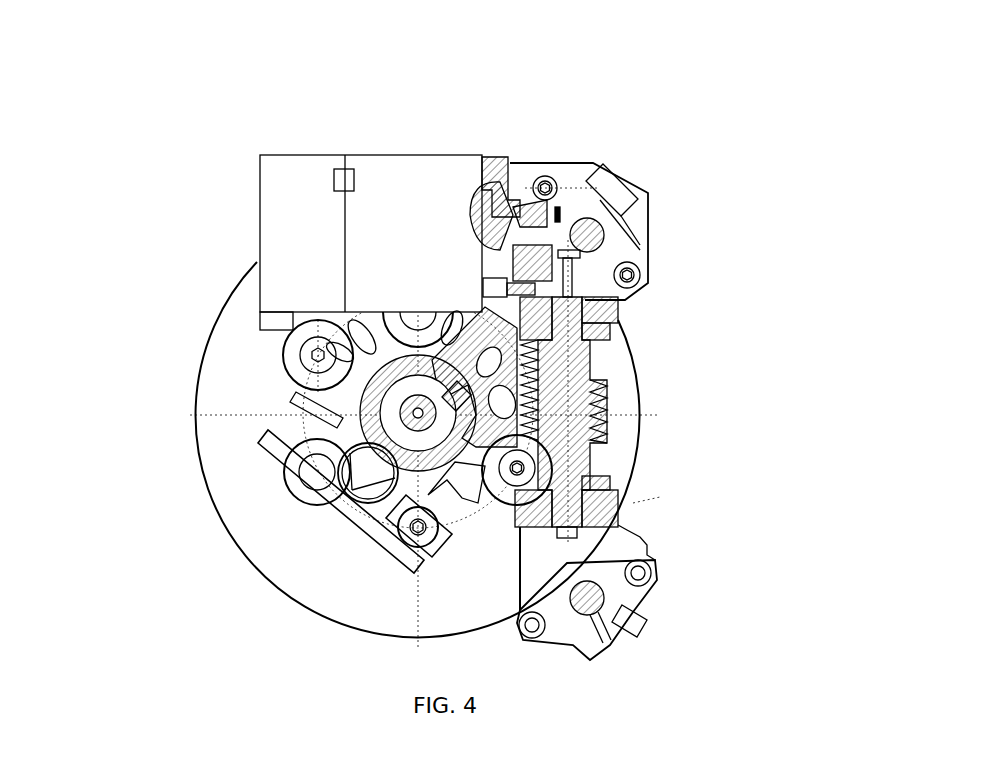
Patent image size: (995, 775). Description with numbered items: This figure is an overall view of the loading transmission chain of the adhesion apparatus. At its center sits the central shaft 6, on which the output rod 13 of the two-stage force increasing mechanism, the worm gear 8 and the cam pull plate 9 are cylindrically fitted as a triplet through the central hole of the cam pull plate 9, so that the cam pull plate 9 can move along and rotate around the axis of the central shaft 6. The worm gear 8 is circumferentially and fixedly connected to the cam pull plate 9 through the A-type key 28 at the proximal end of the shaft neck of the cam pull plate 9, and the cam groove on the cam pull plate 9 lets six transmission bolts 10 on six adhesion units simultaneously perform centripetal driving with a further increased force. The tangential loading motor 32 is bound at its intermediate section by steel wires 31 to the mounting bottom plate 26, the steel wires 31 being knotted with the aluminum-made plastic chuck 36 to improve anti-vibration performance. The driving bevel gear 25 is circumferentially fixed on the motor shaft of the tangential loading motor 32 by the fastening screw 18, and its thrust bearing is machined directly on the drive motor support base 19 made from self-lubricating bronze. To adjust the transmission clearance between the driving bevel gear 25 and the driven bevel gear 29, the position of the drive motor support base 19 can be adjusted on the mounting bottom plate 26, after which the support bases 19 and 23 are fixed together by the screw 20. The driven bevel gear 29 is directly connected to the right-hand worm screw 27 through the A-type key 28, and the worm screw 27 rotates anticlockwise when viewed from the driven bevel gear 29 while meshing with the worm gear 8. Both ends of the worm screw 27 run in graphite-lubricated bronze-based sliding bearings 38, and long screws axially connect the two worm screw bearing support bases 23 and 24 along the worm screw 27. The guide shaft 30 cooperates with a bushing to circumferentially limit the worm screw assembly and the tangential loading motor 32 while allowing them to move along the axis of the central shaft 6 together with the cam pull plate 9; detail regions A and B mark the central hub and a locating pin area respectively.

The central shaft 6 is at (410, 443).
The worm gear 8 is at (642, 415).
The cam pull plate 9 is at (330, 482).
The transmission bolts 10 is at (305, 355).
The output rod 13 is at (345, 478).
The fastening screw 18 is at (528, 212).
The drive motor support base 19 is at (505, 162).
The screw 20 is at (490, 285).
The worm screw bearing support base 23 is at (603, 307).
The worm screw bearing support base 24 is at (600, 522).
The driving bevel gear 25 is at (546, 180).
The mounting bottom plate 26 is at (618, 182).
The worm screw 27 is at (577, 350).
The A-type key 28 is at (522, 430).
The driven bevel gear 29 is at (645, 278).
The guide shaft 30 is at (590, 235).
The steel wires 31 is at (280, 242).
The tangential loading motor 32 is at (345, 207).
The plastic chuck 36 is at (344, 179).
The sliding bearing 38 is at (605, 330).
The hub A is at (407, 418).
The pin B is at (557, 214).